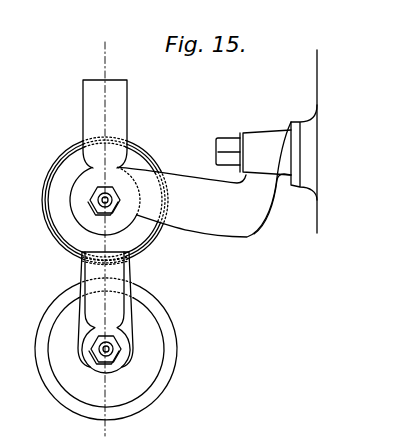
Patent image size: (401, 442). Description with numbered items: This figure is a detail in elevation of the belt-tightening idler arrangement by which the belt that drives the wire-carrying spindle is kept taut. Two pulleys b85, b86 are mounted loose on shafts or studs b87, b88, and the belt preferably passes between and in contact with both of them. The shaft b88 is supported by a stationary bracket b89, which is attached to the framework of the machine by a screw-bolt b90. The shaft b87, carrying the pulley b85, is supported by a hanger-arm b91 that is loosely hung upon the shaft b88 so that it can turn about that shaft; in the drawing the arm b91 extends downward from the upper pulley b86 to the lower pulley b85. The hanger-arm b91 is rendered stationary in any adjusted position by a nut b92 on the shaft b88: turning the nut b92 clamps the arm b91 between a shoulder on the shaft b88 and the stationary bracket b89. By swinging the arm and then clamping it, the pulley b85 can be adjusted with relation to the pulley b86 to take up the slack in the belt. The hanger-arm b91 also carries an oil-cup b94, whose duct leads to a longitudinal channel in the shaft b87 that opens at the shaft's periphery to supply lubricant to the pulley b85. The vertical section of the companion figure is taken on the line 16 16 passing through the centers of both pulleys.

The section line 16 is at (101, 242).
The pulley b85 is at (173, 329).
The pulley b86 is at (138, 148).
The shaft b87 is at (105, 349).
The shaft b88 is at (99, 201).
The stationary bracket b89 is at (190, 178).
The screw-bolt b90 is at (225, 138).
The hanger-arm b91 is at (134, 260).
The nut b92 is at (97, 213).
The oil-cup b94 is at (88, 275).